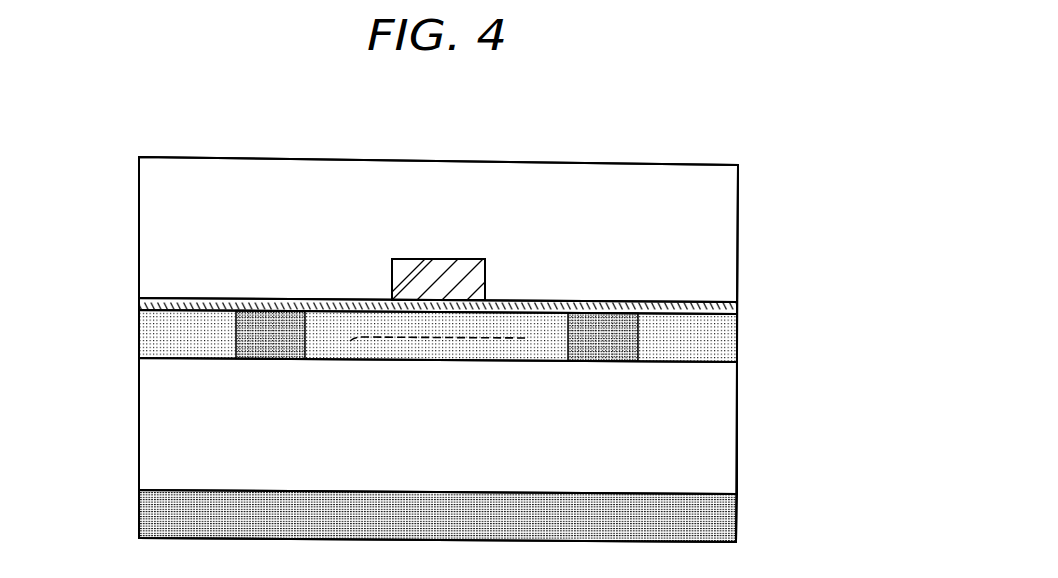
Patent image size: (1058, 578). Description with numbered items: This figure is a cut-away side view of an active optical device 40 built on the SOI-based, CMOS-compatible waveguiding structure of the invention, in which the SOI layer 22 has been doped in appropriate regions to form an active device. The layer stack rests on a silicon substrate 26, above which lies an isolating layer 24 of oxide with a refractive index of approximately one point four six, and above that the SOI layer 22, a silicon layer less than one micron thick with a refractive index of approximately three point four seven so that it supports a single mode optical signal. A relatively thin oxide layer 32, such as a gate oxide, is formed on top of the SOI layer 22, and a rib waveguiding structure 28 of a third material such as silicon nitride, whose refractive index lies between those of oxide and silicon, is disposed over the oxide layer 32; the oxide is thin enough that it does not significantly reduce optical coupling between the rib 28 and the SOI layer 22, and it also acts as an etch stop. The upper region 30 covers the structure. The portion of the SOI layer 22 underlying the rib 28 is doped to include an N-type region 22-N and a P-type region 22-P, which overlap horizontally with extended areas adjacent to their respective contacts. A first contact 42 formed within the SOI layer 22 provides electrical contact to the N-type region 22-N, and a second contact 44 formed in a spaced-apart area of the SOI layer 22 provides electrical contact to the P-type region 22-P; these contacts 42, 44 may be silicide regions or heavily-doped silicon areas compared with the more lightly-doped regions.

The active optical device 40 is at (644, 132).
The upper dielectric / passivation layer 30 is at (724, 241).
The rib waveguiding structure 28 is at (438, 265).
The oxide layer 32 is at (722, 311).
The SOI layer 22 is at (140, 330).
The N-type region 22-N is at (322, 330).
The P-type region 22-P is at (537, 313).
The first contact 42 is at (265, 348).
The second contact 44 is at (607, 353).
The isolating layer 24 is at (718, 482).
The silicon substrate 26 is at (142, 506).